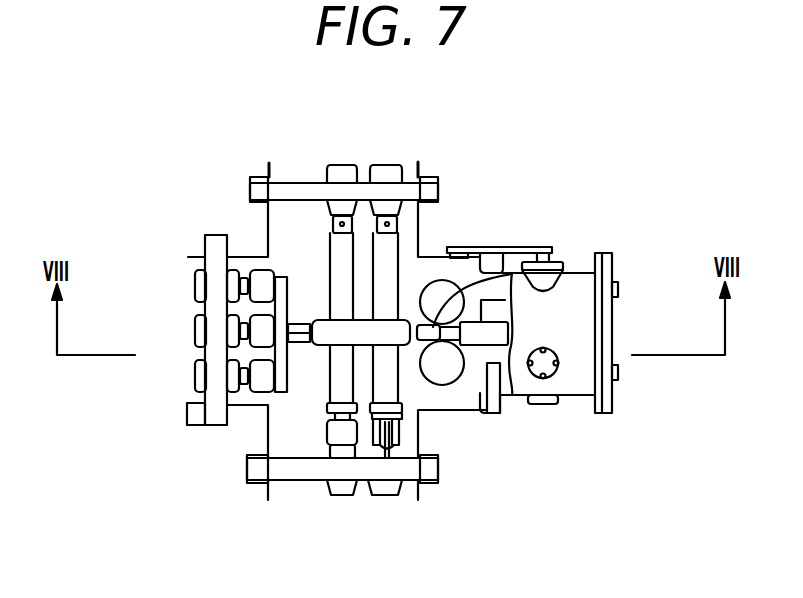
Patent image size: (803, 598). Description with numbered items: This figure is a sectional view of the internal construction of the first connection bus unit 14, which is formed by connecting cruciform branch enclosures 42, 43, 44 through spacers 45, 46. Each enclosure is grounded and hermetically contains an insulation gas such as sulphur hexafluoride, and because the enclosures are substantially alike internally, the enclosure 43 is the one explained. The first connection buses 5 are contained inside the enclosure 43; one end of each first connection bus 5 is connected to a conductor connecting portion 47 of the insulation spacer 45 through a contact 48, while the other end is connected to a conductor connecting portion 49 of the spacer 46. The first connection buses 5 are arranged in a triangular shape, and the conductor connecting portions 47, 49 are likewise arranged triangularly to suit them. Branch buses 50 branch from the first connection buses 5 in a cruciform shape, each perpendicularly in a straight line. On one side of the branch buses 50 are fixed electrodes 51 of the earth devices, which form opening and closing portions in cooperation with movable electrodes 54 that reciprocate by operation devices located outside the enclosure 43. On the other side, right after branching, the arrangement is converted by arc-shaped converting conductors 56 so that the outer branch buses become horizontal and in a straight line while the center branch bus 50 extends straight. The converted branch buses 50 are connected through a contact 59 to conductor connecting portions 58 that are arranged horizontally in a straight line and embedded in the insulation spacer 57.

The first connection bus 5 is at (393, 328).
The first connection bus unit 14 is at (591, 141).
The cruciform branch enclosure 42 is at (260, 484).
The cruciform branch enclosure 43 is at (265, 222).
The cruciform branch enclosure 44 is at (268, 167).
The insulation spacer 45 is at (438, 470).
The spacer 46 is at (340, 263).
The conductor connecting portion 47 is at (381, 496).
The contact 48 is at (328, 432).
The conductor connecting portion 49 is at (393, 165).
The branch bus 50 is at (390, 256).
The fixed electrode 51 is at (550, 265).
The movable electrode 54 is at (513, 327).
The arc-shaped converting conductor 56 is at (290, 297).
The insulation spacer 57 is at (222, 426).
The conductor connecting portion 58 is at (200, 373).
The contact 59 is at (260, 376).